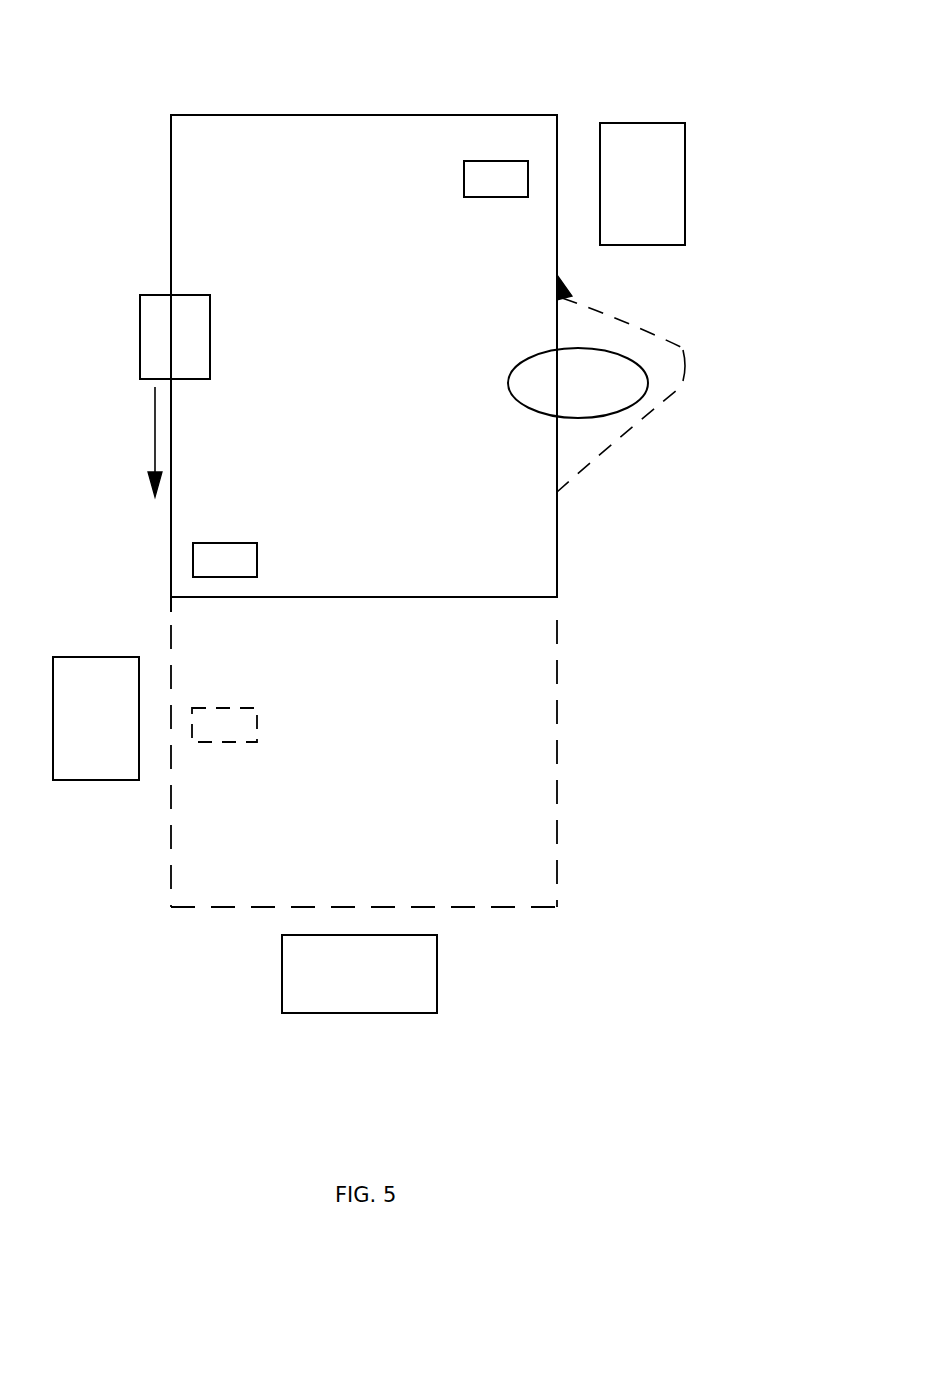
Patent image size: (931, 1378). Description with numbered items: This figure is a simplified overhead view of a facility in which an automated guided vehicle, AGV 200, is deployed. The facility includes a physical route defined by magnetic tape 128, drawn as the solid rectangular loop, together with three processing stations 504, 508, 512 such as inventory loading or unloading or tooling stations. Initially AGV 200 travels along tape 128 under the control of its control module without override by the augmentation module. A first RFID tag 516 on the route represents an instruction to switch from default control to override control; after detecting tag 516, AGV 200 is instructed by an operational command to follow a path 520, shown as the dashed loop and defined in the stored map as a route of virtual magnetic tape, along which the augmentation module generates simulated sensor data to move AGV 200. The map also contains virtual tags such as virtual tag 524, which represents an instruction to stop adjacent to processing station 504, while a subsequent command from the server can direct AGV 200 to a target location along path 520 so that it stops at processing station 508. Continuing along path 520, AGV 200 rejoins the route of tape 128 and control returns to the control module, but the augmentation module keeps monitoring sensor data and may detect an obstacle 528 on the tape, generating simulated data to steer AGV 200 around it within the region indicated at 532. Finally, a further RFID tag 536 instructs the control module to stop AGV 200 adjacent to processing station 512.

The magnetic tape 128 is at (362, 115).
The AGV 200 is at (193, 350).
The processing station 504 is at (115, 733).
The processing station 508 is at (378, 988).
The processing station 512 is at (660, 198).
The first RFID tag 516 is at (257, 559).
The path 520 is at (557, 750).
The virtual tag 524 is at (257, 725).
The obstacle 528 is at (598, 399).
The field of view 532 is at (686, 366).
The further RFID tag 536 is at (464, 180).